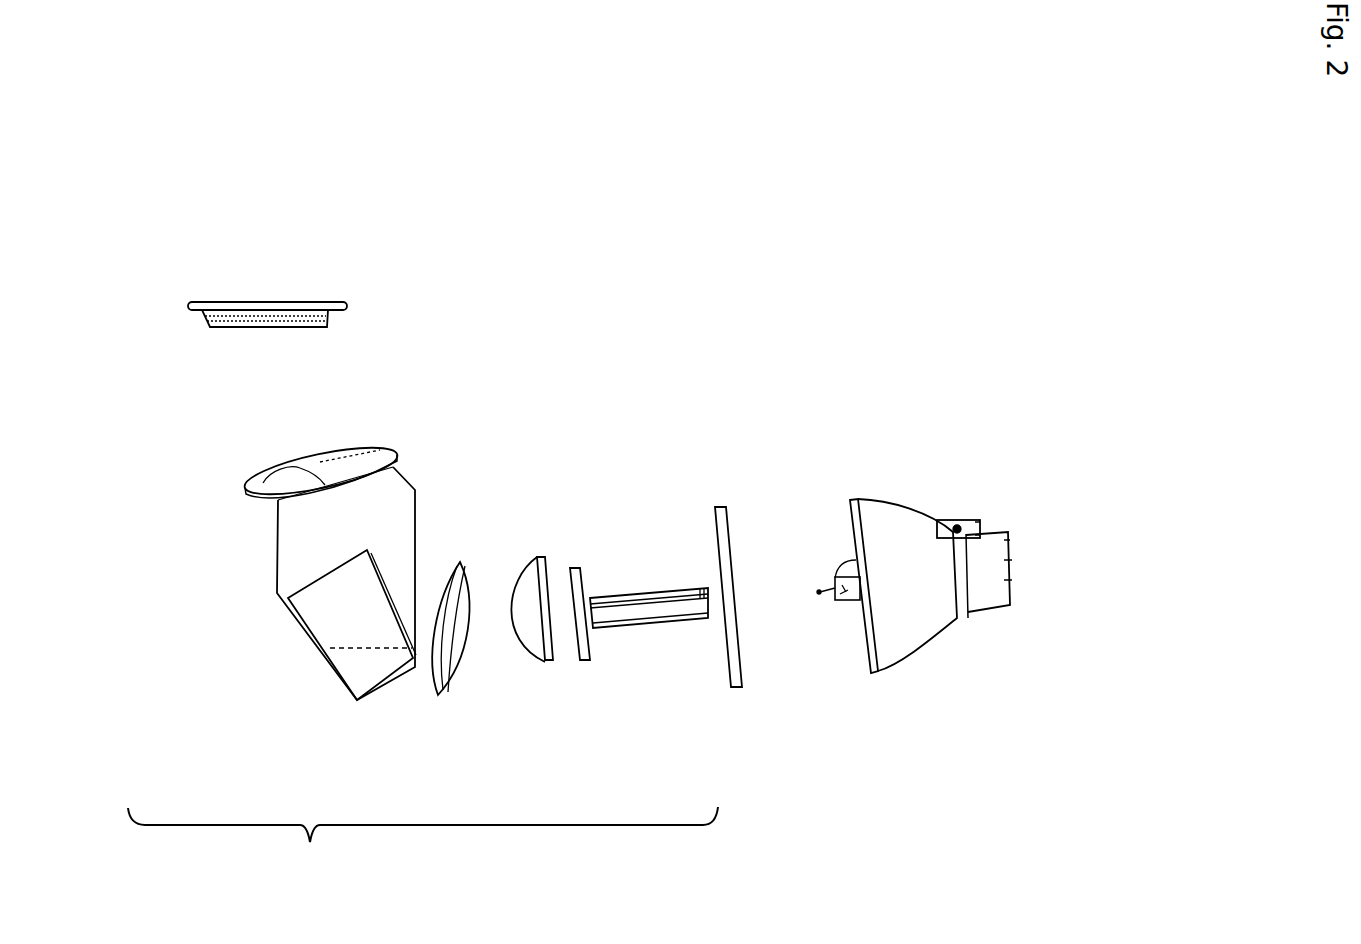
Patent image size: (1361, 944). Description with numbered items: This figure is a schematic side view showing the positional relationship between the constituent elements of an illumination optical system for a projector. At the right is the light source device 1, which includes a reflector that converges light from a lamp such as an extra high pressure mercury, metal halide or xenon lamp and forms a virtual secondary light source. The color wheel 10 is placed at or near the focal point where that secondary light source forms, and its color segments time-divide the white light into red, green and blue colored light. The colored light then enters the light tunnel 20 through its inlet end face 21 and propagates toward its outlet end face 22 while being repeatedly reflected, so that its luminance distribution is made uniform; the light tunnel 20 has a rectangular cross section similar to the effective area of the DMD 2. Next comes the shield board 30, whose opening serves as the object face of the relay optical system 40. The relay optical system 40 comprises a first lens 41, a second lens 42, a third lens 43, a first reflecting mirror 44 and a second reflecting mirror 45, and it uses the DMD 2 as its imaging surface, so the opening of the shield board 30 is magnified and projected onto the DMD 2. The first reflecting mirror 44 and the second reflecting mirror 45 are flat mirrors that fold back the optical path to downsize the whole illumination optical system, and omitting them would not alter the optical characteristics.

The light source device 1 is at (980, 625).
The DMD 2 is at (255, 302).
The color wheel 10 is at (728, 537).
The light tunnel 20 is at (654, 647).
The inlet end face 21 is at (708, 588).
The outlet end face 22 is at (592, 597).
The shield board 30 is at (580, 577).
The relay optical system 40 is at (423, 844).
The first lens 41 is at (540, 662).
The second lens 42 is at (430, 693).
The third lens 43 is at (372, 448).
The first reflecting mirror 44 is at (347, 675).
The second reflecting mirror 45 is at (287, 570).